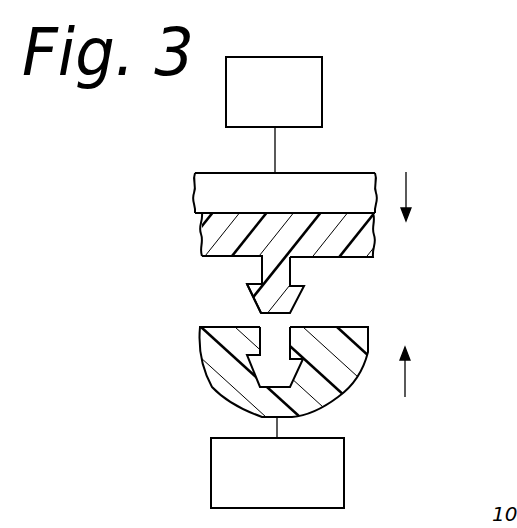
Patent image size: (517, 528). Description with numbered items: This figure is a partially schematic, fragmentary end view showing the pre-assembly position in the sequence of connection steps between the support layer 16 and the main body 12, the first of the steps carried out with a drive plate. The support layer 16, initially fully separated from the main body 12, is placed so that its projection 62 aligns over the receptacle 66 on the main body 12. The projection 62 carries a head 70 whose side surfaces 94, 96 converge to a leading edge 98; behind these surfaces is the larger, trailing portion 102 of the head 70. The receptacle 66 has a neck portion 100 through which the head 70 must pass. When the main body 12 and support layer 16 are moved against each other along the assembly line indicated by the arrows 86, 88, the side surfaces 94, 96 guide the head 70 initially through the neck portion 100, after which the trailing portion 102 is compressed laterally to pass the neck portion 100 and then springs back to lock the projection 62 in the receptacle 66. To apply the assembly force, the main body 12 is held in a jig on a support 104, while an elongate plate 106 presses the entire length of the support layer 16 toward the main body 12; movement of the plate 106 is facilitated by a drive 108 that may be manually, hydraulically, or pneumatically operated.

The main body 12 is at (323, 397).
The support layer 16 is at (212, 231).
The projection 62 is at (262, 271).
The receptacle 66 is at (257, 368).
The head 70 is at (362, 213).
The double-headed arrow 86 is at (406, 190).
The double-headed arrow 88 is at (406, 375).
The side surface 94 is at (247, 294).
The side surface 96 is at (300, 303).
The leading edge 98 is at (338, 326).
The neck portion 100 is at (278, 338).
The trailing portion 102 is at (308, 287).
The support 104 is at (263, 499).
The plate 106 is at (332, 208).
The drive 108 is at (260, 118).